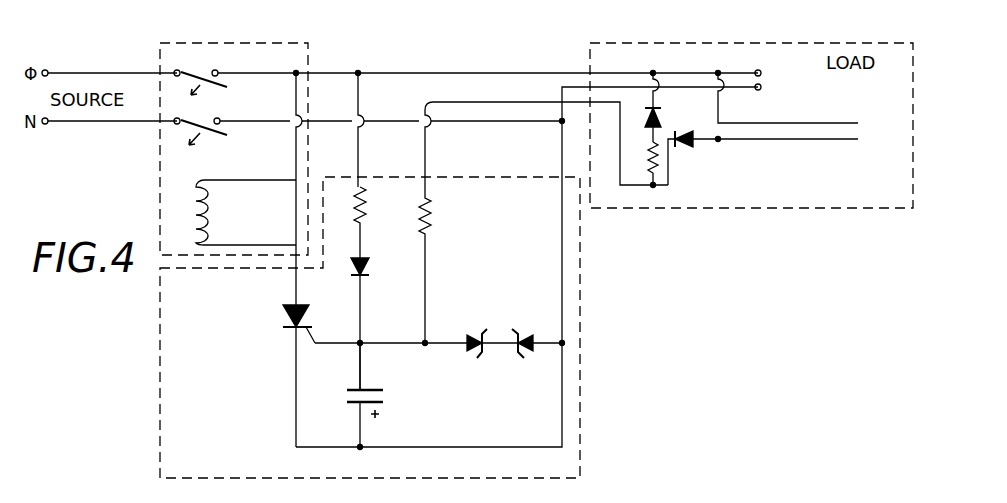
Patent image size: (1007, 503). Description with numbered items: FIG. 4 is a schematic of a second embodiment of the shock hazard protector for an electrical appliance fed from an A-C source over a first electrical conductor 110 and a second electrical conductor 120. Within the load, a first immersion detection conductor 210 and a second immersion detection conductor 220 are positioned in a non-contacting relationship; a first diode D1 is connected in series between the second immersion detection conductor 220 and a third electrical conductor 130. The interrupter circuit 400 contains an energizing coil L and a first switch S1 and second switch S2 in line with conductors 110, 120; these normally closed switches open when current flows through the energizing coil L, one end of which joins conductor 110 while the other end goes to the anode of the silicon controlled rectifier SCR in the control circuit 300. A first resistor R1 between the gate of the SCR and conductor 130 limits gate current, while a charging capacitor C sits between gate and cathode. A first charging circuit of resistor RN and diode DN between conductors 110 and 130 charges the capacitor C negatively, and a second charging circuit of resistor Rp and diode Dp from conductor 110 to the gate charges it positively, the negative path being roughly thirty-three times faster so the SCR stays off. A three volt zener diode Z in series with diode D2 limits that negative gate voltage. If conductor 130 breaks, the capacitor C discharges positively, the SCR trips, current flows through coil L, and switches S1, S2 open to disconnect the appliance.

The first electrical conductor 110 is at (495, 72).
The second electrical conductor 120 is at (485, 123).
The third electrical conductor 130 is at (443, 102).
The first immersion detection conductor 210 is at (830, 123).
The second immersion detection conductor 220 is at (832, 141).
The control circuit 300 is at (580, 478).
The interrupter circuit 400 is at (193, 42).
The first switch S1 is at (200, 70).
The second switch S2 is at (200, 123).
The energizing coil L is at (186, 211).
The resistor Rp RP is at (375, 222).
The diode Dp DP is at (373, 324).
The first resistor R1 is at (441, 226).
The silicon controlled rectifier SCR is at (283, 315).
The charging capacitor C is at (343, 395).
The zener diode Z is at (476, 359).
The diode D2 is at (523, 361).
The diode DN is at (660, 118).
The resistor RN is at (640, 160).
The first diode D1 is at (686, 158).